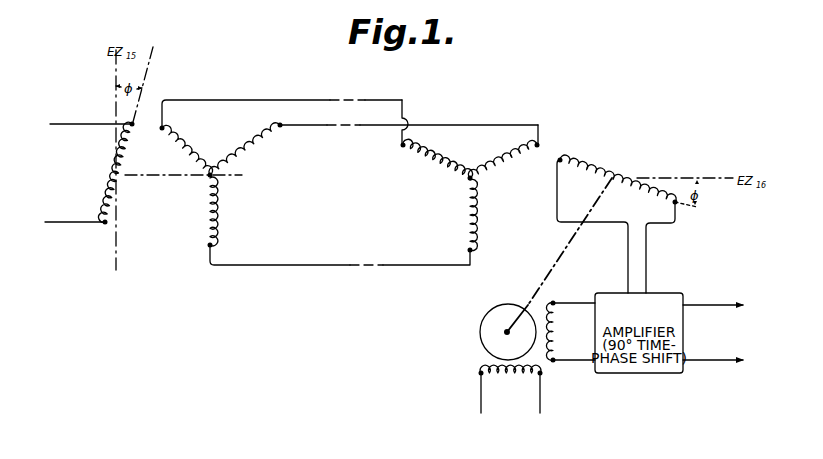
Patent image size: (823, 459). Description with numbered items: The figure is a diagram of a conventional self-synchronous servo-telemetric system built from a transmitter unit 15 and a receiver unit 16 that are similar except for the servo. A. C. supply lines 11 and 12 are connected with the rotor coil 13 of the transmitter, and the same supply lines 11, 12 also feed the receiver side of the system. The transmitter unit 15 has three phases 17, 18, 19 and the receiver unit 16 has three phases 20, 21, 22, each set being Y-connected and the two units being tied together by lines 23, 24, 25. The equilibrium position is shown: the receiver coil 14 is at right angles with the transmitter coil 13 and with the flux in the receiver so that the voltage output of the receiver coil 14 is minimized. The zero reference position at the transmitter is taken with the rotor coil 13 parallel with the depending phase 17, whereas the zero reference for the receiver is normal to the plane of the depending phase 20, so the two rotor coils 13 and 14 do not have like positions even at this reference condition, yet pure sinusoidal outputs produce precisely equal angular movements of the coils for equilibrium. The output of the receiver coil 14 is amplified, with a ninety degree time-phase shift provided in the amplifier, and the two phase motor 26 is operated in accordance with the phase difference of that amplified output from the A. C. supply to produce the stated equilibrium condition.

The A. C. supply line 11 is at (394, 275).
The A. C. supply line 12 is at (393, 324).
The rotor coil 13 is at (117, 203).
The receiver coil 14 is at (607, 170).
The transmitter unit 15 is at (347, 180).
The receiver unit 16 is at (501, 169).
The phase 17 is at (213, 222).
The phase 18 is at (262, 153).
The phase 19 is at (193, 150).
The phase 20 is at (477, 230).
The phase 21 is at (503, 167).
The phase 22 is at (430, 167).
The line 23 is at (312, 267).
The line 24 is at (315, 128).
The line 25 is at (293, 100).
The two phase motor 26 is at (478, 333).